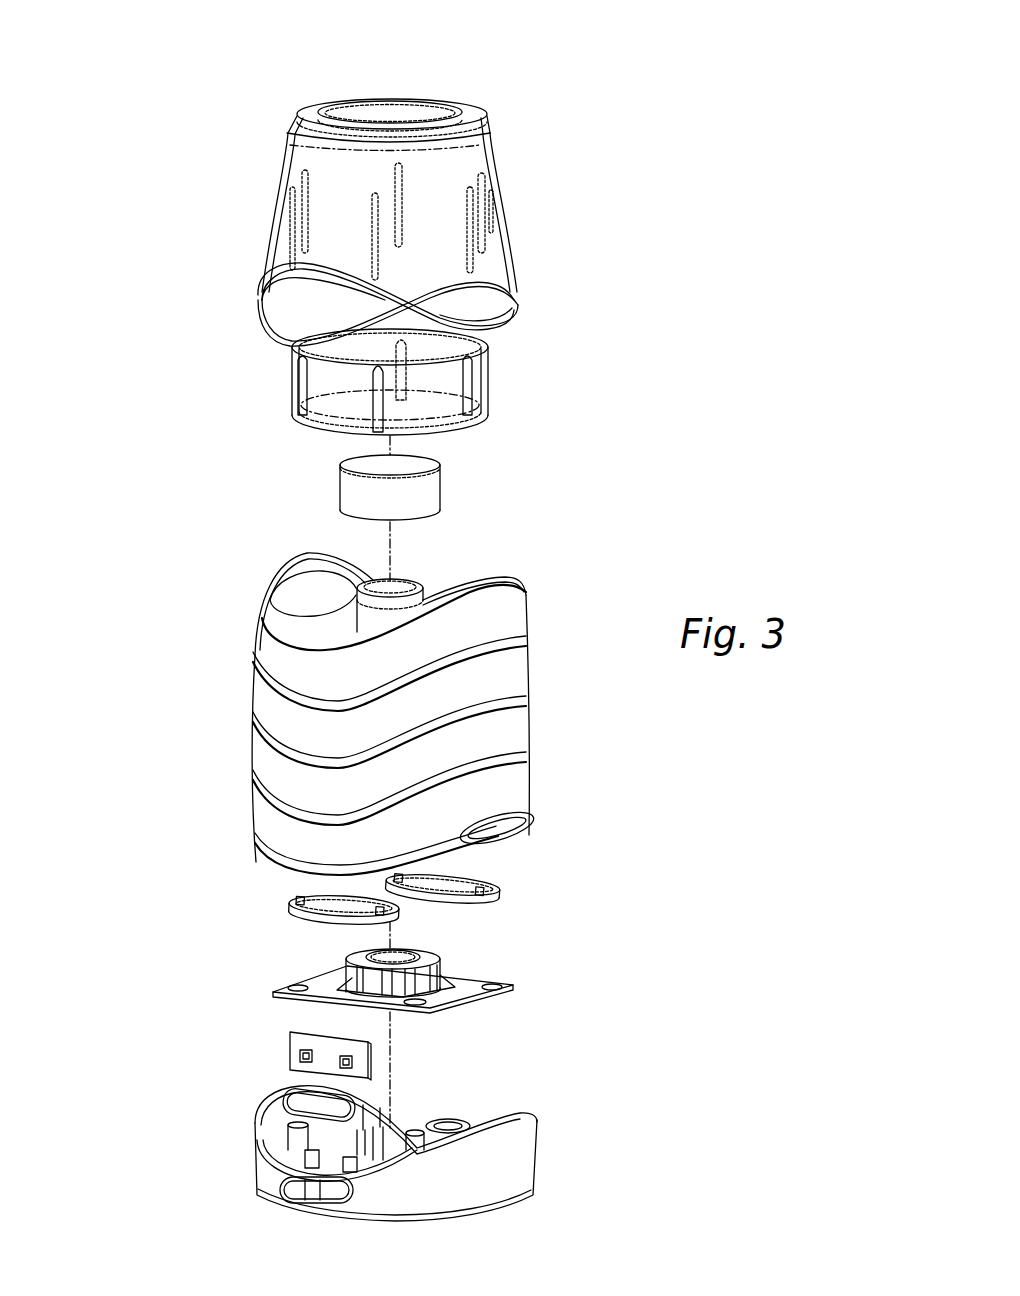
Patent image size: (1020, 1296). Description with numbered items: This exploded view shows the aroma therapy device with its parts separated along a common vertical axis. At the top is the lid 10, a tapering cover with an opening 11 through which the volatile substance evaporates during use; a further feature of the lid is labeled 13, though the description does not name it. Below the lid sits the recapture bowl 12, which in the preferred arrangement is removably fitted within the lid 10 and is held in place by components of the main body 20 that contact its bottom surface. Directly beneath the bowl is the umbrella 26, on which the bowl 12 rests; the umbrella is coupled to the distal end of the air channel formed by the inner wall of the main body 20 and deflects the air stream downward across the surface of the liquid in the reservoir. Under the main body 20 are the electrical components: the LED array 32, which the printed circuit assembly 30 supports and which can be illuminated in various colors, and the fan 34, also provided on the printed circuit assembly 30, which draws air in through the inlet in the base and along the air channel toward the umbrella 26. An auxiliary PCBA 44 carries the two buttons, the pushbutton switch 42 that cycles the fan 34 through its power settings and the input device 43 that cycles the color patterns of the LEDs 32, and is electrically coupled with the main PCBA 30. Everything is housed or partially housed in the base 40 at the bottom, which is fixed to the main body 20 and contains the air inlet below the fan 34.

The lid 10 is at (268, 148).
The opening 11 is at (349, 103).
The rim 13 is at (452, 100).
The recapture bowl 12 is at (283, 377).
The umbrella 26 is at (453, 484).
The main body 20 is at (255, 712).
The LED array 32 is at (513, 872).
The fan 34 is at (350, 978).
The printed circuit assembly 30 is at (513, 990).
The auxiliary PCBA 44 is at (278, 1022).
The pushbutton switch 42 is at (293, 1052).
The input device 43 is at (340, 1062).
The base 40 is at (503, 1158).